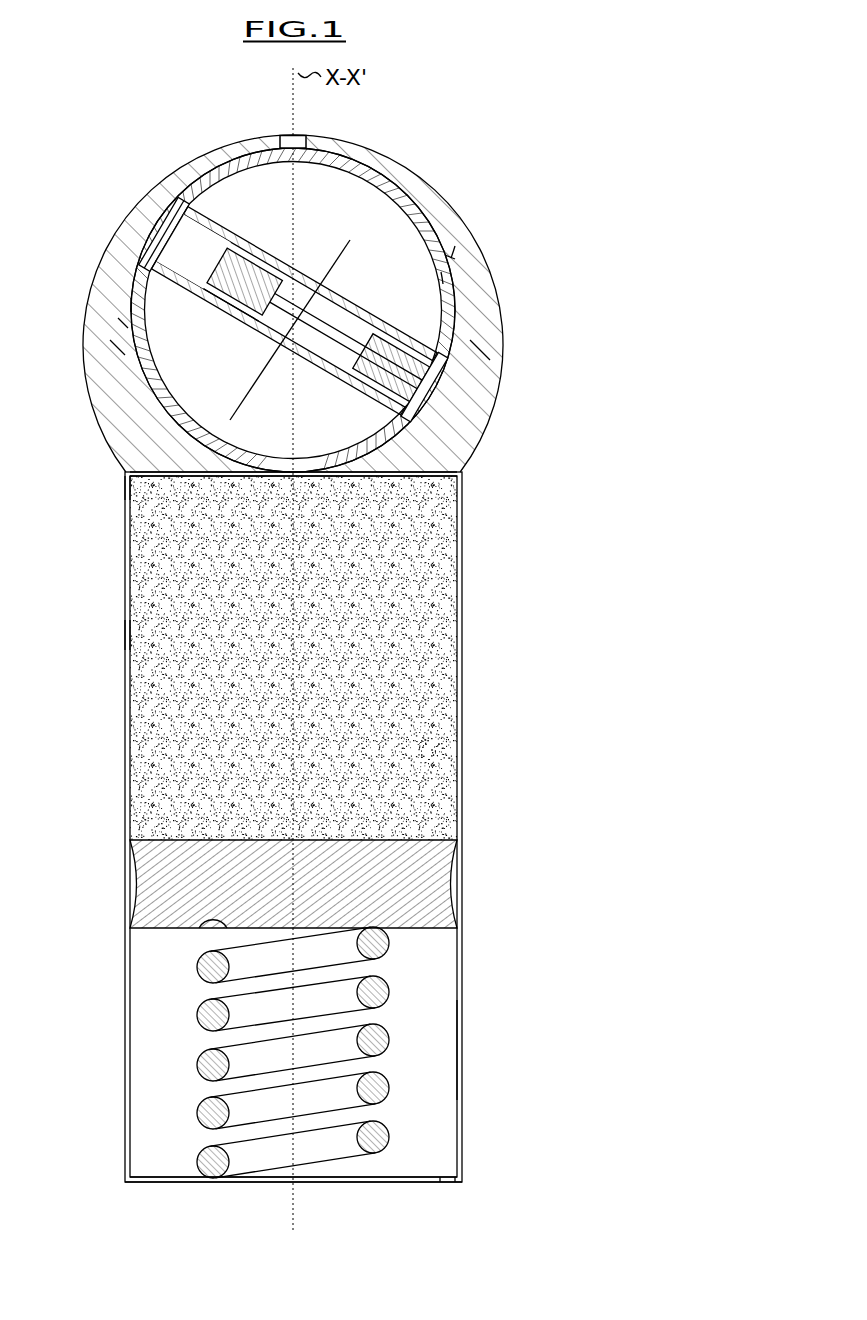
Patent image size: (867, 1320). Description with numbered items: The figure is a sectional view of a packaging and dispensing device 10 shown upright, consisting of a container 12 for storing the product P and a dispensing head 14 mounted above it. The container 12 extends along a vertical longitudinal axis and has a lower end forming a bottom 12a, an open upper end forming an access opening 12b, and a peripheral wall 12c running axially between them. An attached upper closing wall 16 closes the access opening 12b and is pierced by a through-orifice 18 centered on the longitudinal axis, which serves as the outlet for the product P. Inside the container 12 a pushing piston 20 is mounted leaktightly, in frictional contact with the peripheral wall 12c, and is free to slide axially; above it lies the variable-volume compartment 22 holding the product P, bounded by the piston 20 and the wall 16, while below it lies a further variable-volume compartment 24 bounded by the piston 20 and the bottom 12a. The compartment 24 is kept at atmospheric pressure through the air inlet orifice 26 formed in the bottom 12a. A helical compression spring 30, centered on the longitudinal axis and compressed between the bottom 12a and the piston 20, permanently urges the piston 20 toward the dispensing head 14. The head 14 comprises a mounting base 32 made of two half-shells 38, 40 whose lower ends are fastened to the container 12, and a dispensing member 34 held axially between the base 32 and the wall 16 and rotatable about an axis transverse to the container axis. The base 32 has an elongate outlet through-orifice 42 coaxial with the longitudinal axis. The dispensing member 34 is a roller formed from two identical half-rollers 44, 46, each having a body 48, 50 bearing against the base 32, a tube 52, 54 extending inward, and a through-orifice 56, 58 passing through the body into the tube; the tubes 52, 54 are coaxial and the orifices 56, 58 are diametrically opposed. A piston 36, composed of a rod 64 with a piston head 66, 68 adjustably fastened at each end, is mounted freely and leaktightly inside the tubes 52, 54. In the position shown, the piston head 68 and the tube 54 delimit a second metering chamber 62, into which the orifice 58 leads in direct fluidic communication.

The packaging and dispensing device 10 is at (466, 128).
The container 12 is at (462, 683).
The bottom 12a is at (166, 1186).
The access opening 12b is at (148, 491).
The peripheral wall 12c is at (125, 635).
The dispensing head 14 is at (151, 184).
The upper closing wall 16 is at (300, 480).
The through-orifice 18 is at (420, 480).
The pushing piston 20 is at (410, 882).
The variable-volume compartment 22 is at (172, 736).
The additional variable-volume compartment 24 is at (415, 1069).
The orifice 26 is at (430, 1184).
The spring 30 is at (375, 995).
The mounting base 32 is at (504, 313).
The dispensing member 34 is at (234, 174).
The piston 36 is at (392, 330).
The half-shell 38 is at (470, 350).
The half-shell 40 is at (120, 355).
The outlet through-orifice 42 is at (306, 138).
The half-roller 44 is at (462, 250).
The half-roller 46 is at (137, 306).
The body 48 is at (452, 278).
The body 50 is at (135, 326).
The tube 52 is at (440, 385).
The tube 54 is at (230, 335).
The through-orifice 56 is at (352, 340).
The through-orifice 58 is at (160, 225).
The second metering chamber 62 is at (188, 250).
The rod 64 is at (338, 327).
The piston head 66 is at (446, 260).
The piston head 68 is at (266, 222).
The product P is at (430, 750).